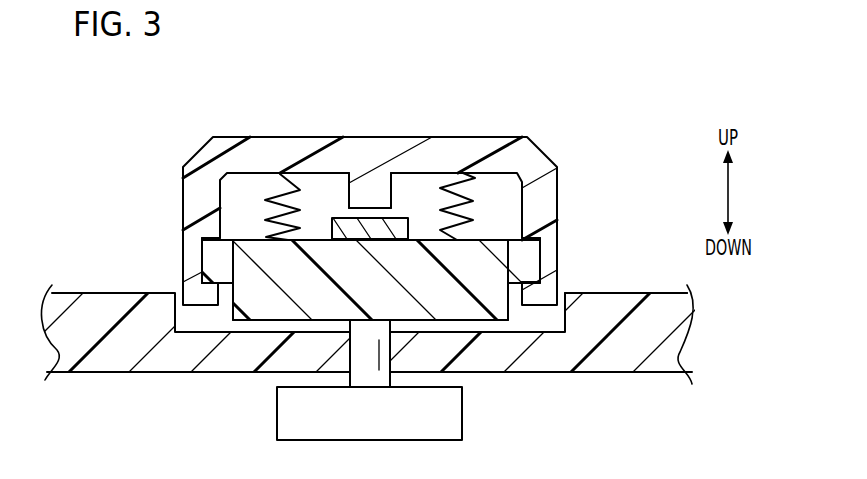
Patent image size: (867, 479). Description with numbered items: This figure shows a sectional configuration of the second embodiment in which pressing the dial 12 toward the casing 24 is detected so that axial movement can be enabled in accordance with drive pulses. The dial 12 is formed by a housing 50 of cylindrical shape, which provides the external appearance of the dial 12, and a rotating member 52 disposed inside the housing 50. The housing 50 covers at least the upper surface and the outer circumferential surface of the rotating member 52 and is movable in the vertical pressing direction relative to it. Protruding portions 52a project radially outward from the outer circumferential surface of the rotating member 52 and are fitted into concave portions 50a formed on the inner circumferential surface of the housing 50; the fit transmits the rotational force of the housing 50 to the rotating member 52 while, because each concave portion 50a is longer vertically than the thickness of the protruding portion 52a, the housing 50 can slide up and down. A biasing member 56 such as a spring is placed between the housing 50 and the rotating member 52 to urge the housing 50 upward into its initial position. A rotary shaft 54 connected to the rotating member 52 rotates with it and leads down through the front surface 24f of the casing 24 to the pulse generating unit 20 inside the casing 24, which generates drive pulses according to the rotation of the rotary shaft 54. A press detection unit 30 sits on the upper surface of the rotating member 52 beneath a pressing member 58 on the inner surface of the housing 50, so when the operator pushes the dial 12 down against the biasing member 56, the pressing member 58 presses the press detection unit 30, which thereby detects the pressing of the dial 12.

The dial 12 is at (473, 130).
The pulse generating unit 20 is at (463, 413).
The casing 24 is at (98, 310).
The front surface of the casing 24f is at (628, 292).
The press detection unit 30 is at (355, 228).
The housing 50 is at (288, 152).
The concave portions 50a is at (216, 244).
The rotating member 52 is at (261, 297).
The protruding portions 52a is at (212, 263).
The rotary shaft 54 is at (362, 356).
The biasing member 56 is at (283, 203).
The pressing member 58 is at (370, 193).